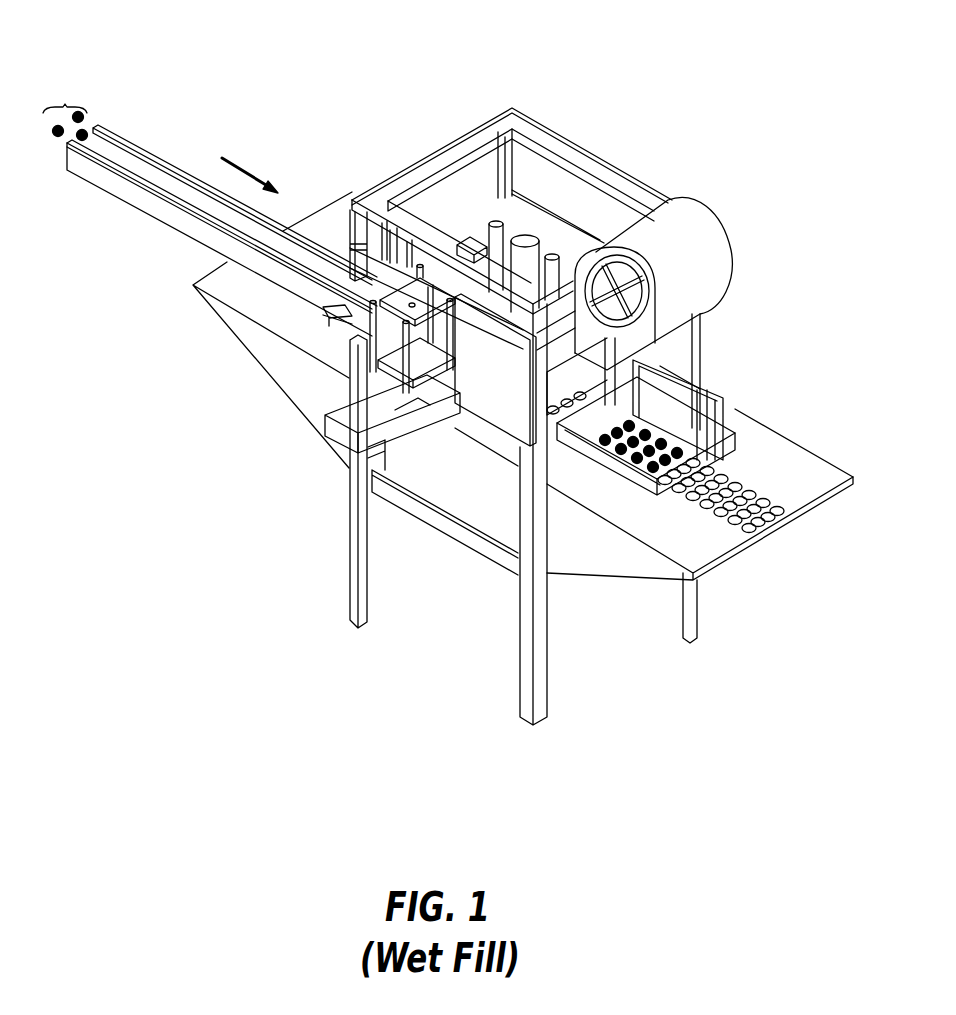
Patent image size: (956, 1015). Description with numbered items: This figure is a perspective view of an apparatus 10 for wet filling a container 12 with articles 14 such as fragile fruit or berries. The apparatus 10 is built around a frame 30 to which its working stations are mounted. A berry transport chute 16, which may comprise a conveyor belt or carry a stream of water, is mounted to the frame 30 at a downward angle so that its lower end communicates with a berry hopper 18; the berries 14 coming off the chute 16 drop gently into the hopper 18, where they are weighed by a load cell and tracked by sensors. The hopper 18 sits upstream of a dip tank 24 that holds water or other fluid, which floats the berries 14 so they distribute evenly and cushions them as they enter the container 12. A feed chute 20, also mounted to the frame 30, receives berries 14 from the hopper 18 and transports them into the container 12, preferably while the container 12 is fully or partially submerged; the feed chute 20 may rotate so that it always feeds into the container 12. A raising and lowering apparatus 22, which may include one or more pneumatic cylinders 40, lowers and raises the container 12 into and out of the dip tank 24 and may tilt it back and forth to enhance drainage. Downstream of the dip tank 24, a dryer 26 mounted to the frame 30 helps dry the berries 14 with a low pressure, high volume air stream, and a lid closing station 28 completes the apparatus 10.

The apparatus 10 is at (228, 46).
The container 12 is at (680, 410).
The articles 14 is at (782, 426).
The berry transport chute 16 is at (130, 192).
The berry hopper 18 is at (352, 380).
The feed chute 20 is at (340, 430).
The raising and lowering apparatus 22 is at (497, 222).
The dip tank 24 is at (490, 495).
The dryer 26 is at (724, 230).
The lid closing station 28 is at (688, 370).
The frame 30 is at (358, 584).
The pneumatic cylinders 40 is at (524, 240).